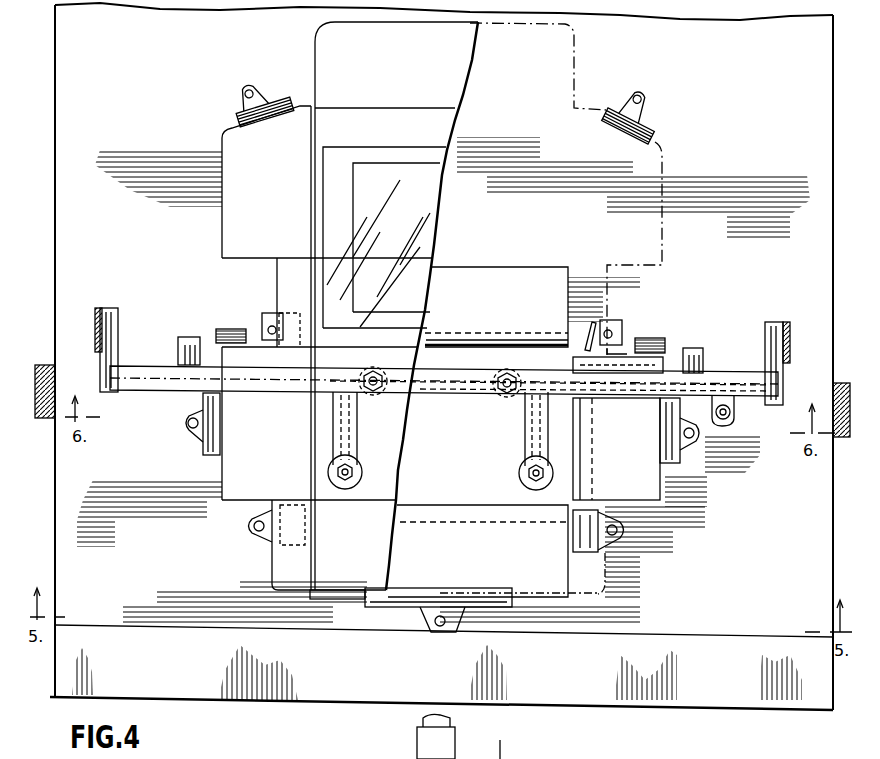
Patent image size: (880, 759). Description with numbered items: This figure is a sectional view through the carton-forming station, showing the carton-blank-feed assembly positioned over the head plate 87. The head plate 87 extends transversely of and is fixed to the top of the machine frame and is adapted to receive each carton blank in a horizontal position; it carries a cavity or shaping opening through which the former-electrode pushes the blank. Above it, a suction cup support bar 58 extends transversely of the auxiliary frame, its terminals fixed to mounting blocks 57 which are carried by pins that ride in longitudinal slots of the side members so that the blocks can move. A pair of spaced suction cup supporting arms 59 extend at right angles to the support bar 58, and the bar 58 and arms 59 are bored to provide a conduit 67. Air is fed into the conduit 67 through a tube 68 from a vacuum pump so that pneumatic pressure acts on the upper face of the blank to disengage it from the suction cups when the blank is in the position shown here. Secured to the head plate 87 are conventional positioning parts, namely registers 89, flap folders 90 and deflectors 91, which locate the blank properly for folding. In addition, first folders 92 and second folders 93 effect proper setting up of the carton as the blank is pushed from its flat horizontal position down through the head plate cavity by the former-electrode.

The mounting blocks 57 is at (118, 318).
The suction cup support bar 58 is at (143, 388).
The suction cup supporting arms 59 is at (525, 436).
The conduit 67 is at (713, 373).
The tube 68 is at (733, 418).
The head plate 87 is at (706, 705).
The registers 89 is at (276, 100).
The flap folders 90 is at (262, 323).
The deflectors 91 is at (180, 340).
The first folders 92 is at (627, 451).
The second folders 93 is at (493, 300).